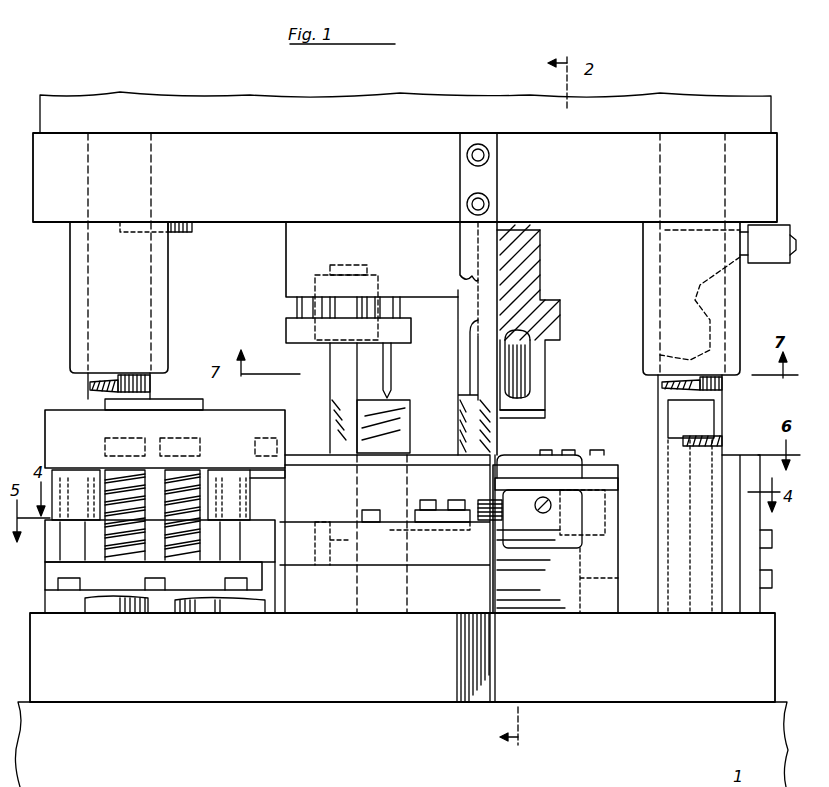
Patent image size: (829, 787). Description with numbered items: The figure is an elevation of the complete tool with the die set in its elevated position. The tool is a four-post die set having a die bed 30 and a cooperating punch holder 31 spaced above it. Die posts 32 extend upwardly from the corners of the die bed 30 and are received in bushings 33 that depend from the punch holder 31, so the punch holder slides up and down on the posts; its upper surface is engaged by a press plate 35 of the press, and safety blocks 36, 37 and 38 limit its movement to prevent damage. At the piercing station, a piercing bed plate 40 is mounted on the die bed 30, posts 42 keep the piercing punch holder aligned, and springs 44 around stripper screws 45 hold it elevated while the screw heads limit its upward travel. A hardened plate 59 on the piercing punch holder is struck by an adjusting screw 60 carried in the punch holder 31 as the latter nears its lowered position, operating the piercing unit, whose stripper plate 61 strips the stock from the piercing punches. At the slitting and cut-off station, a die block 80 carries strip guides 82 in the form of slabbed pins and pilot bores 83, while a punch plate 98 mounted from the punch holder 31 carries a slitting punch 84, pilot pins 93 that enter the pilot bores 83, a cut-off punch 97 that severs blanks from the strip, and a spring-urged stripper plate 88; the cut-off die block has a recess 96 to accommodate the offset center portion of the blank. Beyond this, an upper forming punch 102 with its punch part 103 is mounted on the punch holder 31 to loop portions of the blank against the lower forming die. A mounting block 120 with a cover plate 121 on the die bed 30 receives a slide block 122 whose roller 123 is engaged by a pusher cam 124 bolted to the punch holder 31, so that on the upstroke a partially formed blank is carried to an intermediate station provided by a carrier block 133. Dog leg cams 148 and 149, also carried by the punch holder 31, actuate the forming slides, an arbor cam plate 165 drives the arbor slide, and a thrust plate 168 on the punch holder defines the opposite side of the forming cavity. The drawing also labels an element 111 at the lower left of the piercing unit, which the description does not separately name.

The die bed 30 is at (772, 628).
The punch holder 31 is at (773, 152).
The die posts 32 is at (88, 384).
The bushings 33 is at (165, 258).
The press plate 35 is at (652, 98).
The safety block 36 is at (185, 613).
The safety block 37 is at (716, 413).
The safety block 38 is at (410, 420).
The piercing bed plate 40 is at (153, 576).
The posts 42 is at (235, 535).
The springs 44 is at (111, 450).
The stripper screws 45 is at (218, 450).
The hardened plate 59 is at (205, 403).
The adjusting screw 60 is at (185, 232).
The stripper plate 61 is at (272, 496).
The die block 80 is at (290, 455).
The strip guides 82 is at (355, 512).
The pilot bores 83 is at (350, 540).
The slitting punch 84 is at (380, 283).
The stripper plate 88 is at (412, 330).
The pilot pins 93 is at (392, 358).
The recess 96 is at (455, 530).
The cut-off punch 97 is at (467, 372).
The punch plate 98 is at (303, 250).
The upper forming punch 102 is at (532, 372).
The punch part 103 is at (548, 388).
The stripper block 111 is at (68, 418).
The mounting block 120 is at (605, 562).
The cover plate 121 is at (610, 485).
The slide block 122 is at (580, 518).
The roller 123 is at (480, 498).
The pusher cam 124 is at (494, 177).
The carrier block 133 is at (522, 462).
The dog leg cam 148 is at (330, 375).
The dog leg cam 149 is at (650, 356).
The arbor cam plate 165 is at (458, 400).
The thrust plate 168 is at (535, 415).